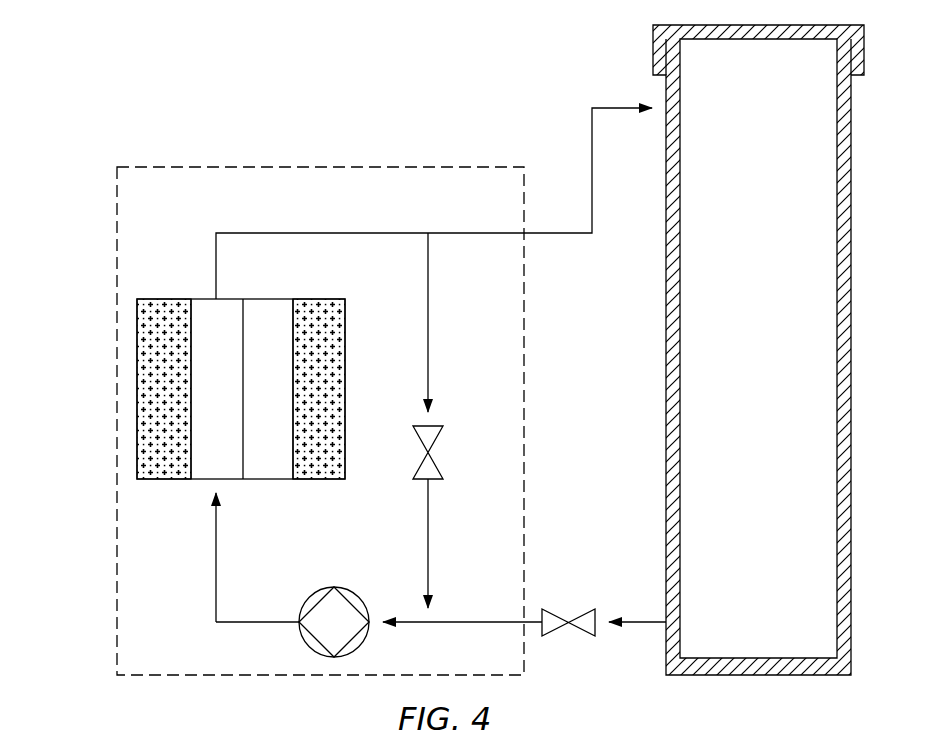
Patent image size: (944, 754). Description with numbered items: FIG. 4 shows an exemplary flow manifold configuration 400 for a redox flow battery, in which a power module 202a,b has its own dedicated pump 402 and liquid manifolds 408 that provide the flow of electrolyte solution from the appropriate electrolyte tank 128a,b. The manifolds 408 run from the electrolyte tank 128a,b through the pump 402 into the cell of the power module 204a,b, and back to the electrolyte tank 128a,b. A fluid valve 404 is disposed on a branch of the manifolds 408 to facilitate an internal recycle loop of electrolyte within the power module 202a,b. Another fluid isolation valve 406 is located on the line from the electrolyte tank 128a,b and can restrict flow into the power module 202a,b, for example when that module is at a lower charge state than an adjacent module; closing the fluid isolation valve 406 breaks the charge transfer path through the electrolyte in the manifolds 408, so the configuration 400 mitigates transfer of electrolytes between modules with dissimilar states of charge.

The flow manifold configuration 400 is at (150, 42).
The power module 202a,b is at (320, 421).
The power module 204a,b is at (152, 386).
The pump 402 is at (320, 592).
The fluid valve 404 is at (430, 452).
The fluid isolation valve 406 is at (562, 632).
The liquid manifolds 408 is at (592, 140).
The electrolyte tank 128a,b is at (758, 350).